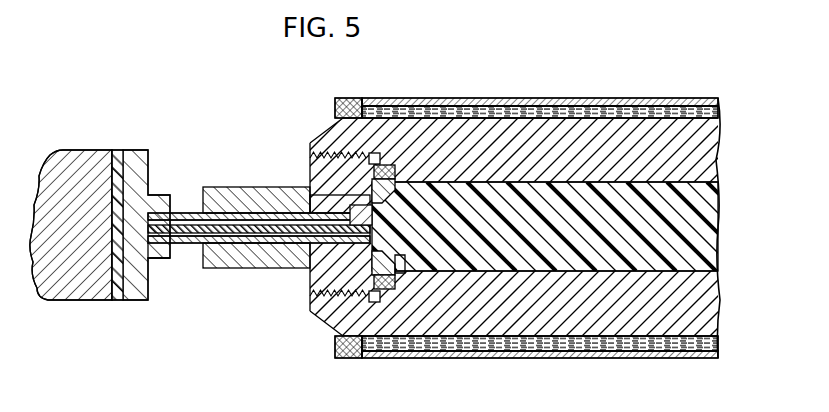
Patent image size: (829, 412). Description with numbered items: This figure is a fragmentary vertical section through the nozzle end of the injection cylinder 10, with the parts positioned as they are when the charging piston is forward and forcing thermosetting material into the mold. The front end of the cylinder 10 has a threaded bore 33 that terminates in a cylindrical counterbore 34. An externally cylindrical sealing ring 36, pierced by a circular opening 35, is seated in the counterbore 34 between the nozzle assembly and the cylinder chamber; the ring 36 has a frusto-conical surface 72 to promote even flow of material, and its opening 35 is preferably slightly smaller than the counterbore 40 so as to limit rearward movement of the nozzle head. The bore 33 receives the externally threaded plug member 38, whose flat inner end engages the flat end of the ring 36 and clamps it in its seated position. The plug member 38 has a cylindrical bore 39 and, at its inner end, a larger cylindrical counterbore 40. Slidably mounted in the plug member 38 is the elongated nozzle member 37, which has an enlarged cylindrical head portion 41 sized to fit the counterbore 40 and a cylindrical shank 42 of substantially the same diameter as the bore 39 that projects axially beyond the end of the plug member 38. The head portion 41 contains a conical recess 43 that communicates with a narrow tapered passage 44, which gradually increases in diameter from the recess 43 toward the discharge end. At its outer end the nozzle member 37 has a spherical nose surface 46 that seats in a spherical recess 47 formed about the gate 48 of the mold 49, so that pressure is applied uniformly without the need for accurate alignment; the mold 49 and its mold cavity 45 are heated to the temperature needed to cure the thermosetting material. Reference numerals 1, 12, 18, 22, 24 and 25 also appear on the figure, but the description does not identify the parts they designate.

The panel 1 is at (71, 306).
The cylinder 10 is at (625, 116).
The center conductor 12 is at (704, 263).
The jacket end 18 is at (365, 99).
The outer jacket 22 is at (673, 100).
The sealing ring 24 is at (348, 99).
The outer jacket lower 25 is at (569, 359).
The threaded bore 33 is at (312, 161).
The cylindrical counterbore 34 is at (390, 289).
The circular opening 35 is at (388, 194).
The sealing ring 36 is at (397, 263).
The nozzle member 37 is at (232, 205).
The plug member 38 is at (304, 284).
The cylindrical bore 39 is at (283, 241).
The cylindrical counterbore 40 is at (372, 212).
The enlarged cylindrical head portion 41 is at (312, 196).
The cylindrical projecting portion or shank 42 is at (300, 218).
The conical recess 43 is at (356, 239).
The narrow tapered passage 44 is at (210, 249).
The mold cavity 45 is at (118, 301).
The spherical nose surface 46 is at (160, 256).
The spherical recess 47 is at (259, 221).
The gate 48 is at (152, 178).
The mold 49 is at (133, 149).
The frusto-conical surface 72 is at (398, 176).